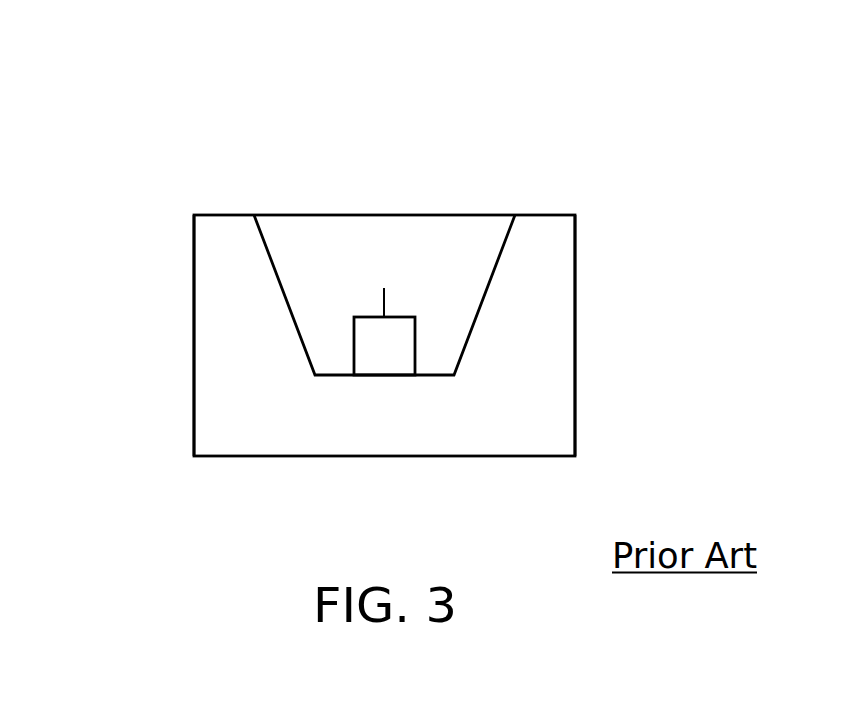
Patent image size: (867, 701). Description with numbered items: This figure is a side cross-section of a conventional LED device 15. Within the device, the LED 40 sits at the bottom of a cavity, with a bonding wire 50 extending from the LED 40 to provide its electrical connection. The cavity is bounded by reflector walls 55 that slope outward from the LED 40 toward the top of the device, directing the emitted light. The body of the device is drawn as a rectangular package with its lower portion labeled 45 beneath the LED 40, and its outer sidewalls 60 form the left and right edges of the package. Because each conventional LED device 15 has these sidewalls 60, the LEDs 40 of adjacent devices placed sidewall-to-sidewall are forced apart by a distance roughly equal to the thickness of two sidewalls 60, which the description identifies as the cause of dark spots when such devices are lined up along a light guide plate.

The conventional LED device 15 is at (187, 95).
The LED 40 is at (380, 340).
The substrate / package body 45 is at (413, 435).
The bonding wire 50 is at (384, 298).
The reflector walls 55 is at (213, 297).
The sidewalls 60 is at (340, 242).